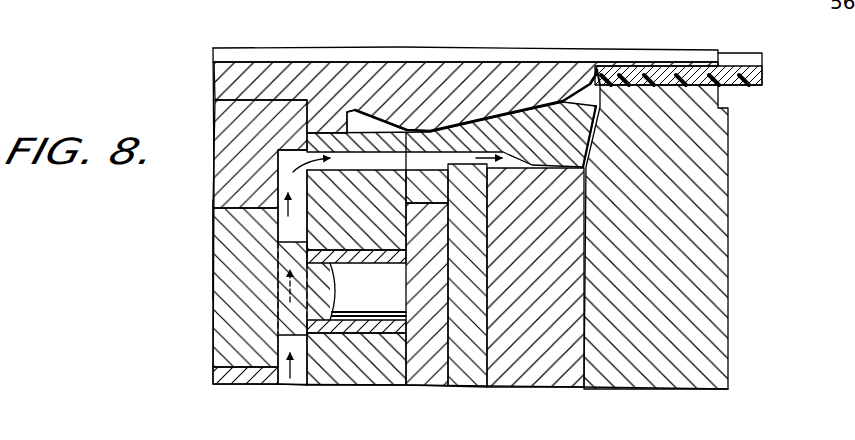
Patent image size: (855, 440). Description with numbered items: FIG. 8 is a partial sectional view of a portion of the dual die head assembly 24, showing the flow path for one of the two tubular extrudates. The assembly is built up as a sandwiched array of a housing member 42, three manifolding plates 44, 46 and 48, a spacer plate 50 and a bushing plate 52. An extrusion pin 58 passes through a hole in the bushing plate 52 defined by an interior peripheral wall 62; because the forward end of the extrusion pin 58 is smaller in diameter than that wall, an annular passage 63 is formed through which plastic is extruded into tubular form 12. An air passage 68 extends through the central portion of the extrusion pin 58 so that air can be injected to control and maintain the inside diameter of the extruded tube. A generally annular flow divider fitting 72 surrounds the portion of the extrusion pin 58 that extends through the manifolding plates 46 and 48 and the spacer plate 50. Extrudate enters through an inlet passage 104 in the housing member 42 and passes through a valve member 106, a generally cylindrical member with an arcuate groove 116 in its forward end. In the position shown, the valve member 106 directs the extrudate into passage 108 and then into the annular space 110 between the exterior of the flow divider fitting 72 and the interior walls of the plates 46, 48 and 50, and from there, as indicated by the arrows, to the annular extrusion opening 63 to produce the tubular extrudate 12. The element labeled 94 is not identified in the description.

The tubular form 12 is at (748, 86).
The dual die head assembly 24 is at (152, 297).
The housing member 42 is at (247, 375).
The manifolding plate 44 is at (365, 370).
The manifolding plate 46 is at (425, 378).
The manifolding plate 48 is at (469, 378).
The spacer plate 50 is at (545, 377).
The bushing plate 52 is at (680, 378).
The extrusion pin 58 is at (343, 65).
The interior peripheral wall 62 is at (678, 68).
The annular passage 63 is at (597, 68).
The air passage 68 is at (512, 58).
The flow divider fitting 72 is at (575, 135).
The lip 94 is at (367, 120).
The inlet passage 104 is at (298, 378).
The valve member 106 is at (222, 337).
The passage 108 is at (283, 177).
The annular space 110 is at (502, 172).
The arcuate groove 116 is at (280, 233).